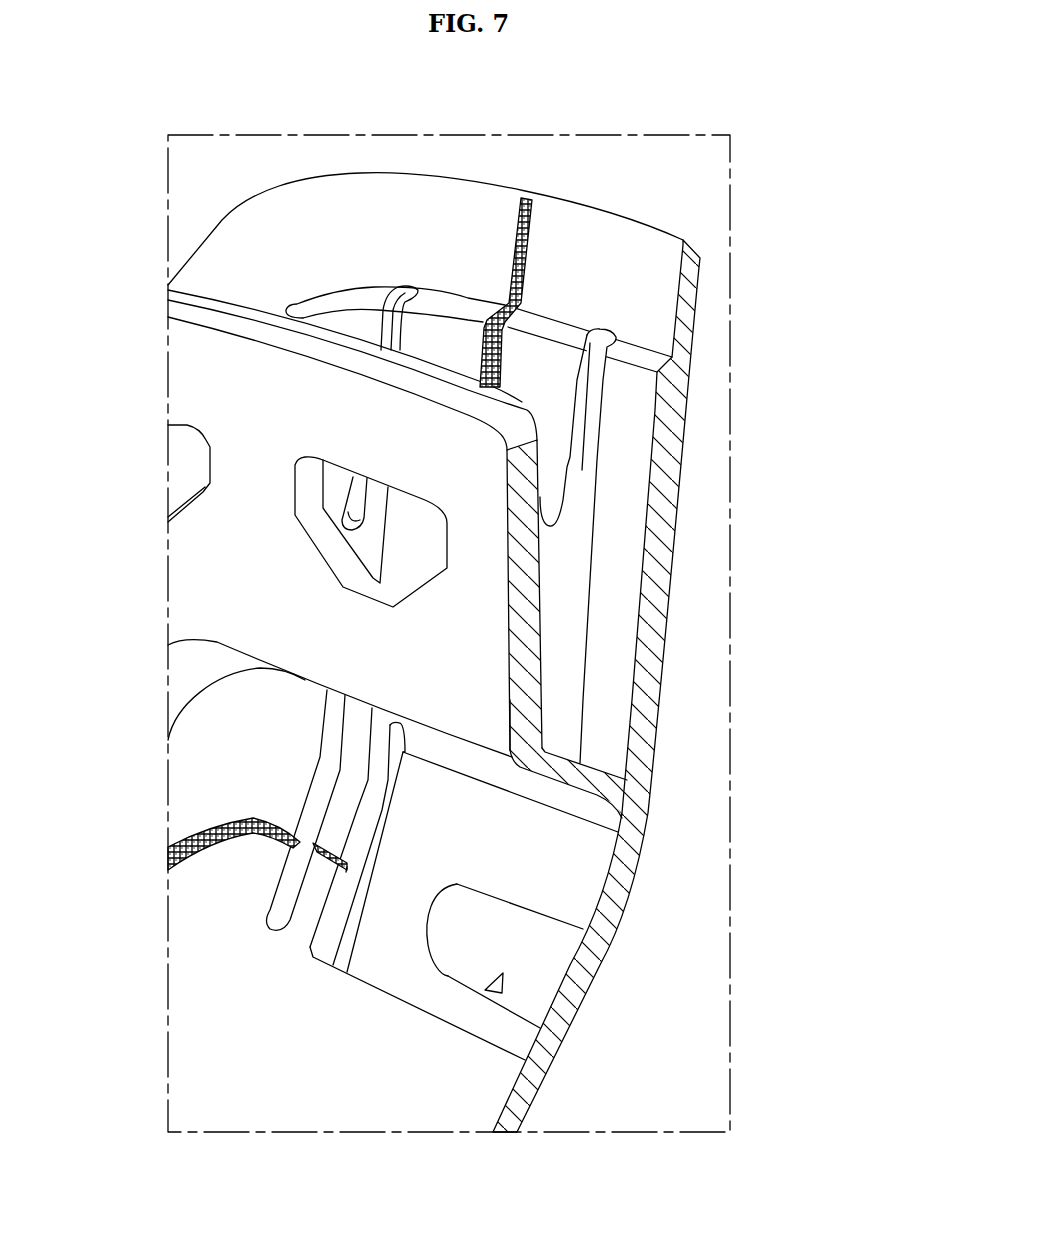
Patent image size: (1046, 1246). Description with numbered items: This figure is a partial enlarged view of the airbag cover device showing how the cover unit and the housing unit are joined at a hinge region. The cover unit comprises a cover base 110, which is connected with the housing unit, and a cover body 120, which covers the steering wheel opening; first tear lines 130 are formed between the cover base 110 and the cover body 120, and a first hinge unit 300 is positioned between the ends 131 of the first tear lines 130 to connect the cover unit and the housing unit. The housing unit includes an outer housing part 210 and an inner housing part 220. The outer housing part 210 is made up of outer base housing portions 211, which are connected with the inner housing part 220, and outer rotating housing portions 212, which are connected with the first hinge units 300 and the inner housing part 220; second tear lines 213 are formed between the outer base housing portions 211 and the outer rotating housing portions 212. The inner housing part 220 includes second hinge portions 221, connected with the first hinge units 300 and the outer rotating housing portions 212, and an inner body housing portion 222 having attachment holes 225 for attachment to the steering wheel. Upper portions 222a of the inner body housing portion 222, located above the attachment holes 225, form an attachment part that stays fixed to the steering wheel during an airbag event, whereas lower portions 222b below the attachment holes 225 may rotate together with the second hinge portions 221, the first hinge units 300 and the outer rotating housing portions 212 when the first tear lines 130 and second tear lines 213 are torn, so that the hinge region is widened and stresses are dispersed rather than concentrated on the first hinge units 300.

The cover base 110 is at (224, 745).
The cover body 120 is at (297, 1083).
The first tear lines 130 is at (200, 843).
The ends of the first tear lines 131 is at (346, 872).
The outer housing part 210 is at (610, 205).
The outer base housing portions 211 is at (405, 243).
The outer rotating housing portions 212 is at (620, 449).
The second tear lines 213 is at (505, 287).
The inner housing part 220 is at (205, 576).
The second hinge portions 221 is at (593, 822).
The inner body housing portion 222 is at (463, 650).
The upper portions 222a is at (460, 467).
The lower portions 222b is at (477, 718).
The attachment holes 225 is at (425, 541).
The first hinge units 300 is at (548, 958).